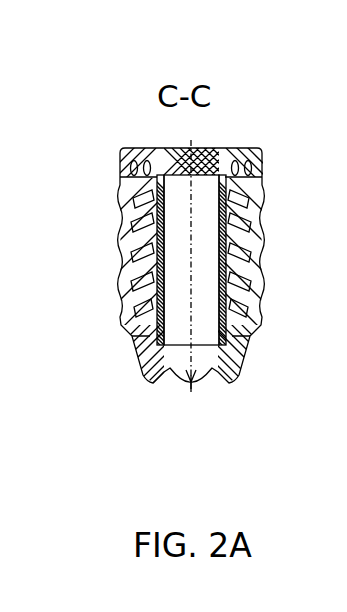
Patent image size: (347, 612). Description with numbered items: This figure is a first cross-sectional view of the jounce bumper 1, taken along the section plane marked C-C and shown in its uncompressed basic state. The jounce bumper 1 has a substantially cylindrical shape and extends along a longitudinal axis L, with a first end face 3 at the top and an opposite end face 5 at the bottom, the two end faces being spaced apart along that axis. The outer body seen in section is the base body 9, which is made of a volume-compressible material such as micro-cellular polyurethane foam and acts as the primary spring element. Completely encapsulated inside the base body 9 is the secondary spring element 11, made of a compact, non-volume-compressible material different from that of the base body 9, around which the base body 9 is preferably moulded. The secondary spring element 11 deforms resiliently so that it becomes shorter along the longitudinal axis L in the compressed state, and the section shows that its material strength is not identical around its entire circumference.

The jounce bumper 1 is at (100, 137).
The first end face 3 is at (245, 132).
The secondary spring element 11 is at (130, 256).
The base body 9 is at (140, 346).
The opposite end face 5 is at (151, 396).
The longitudinal axis L is at (201, 378).